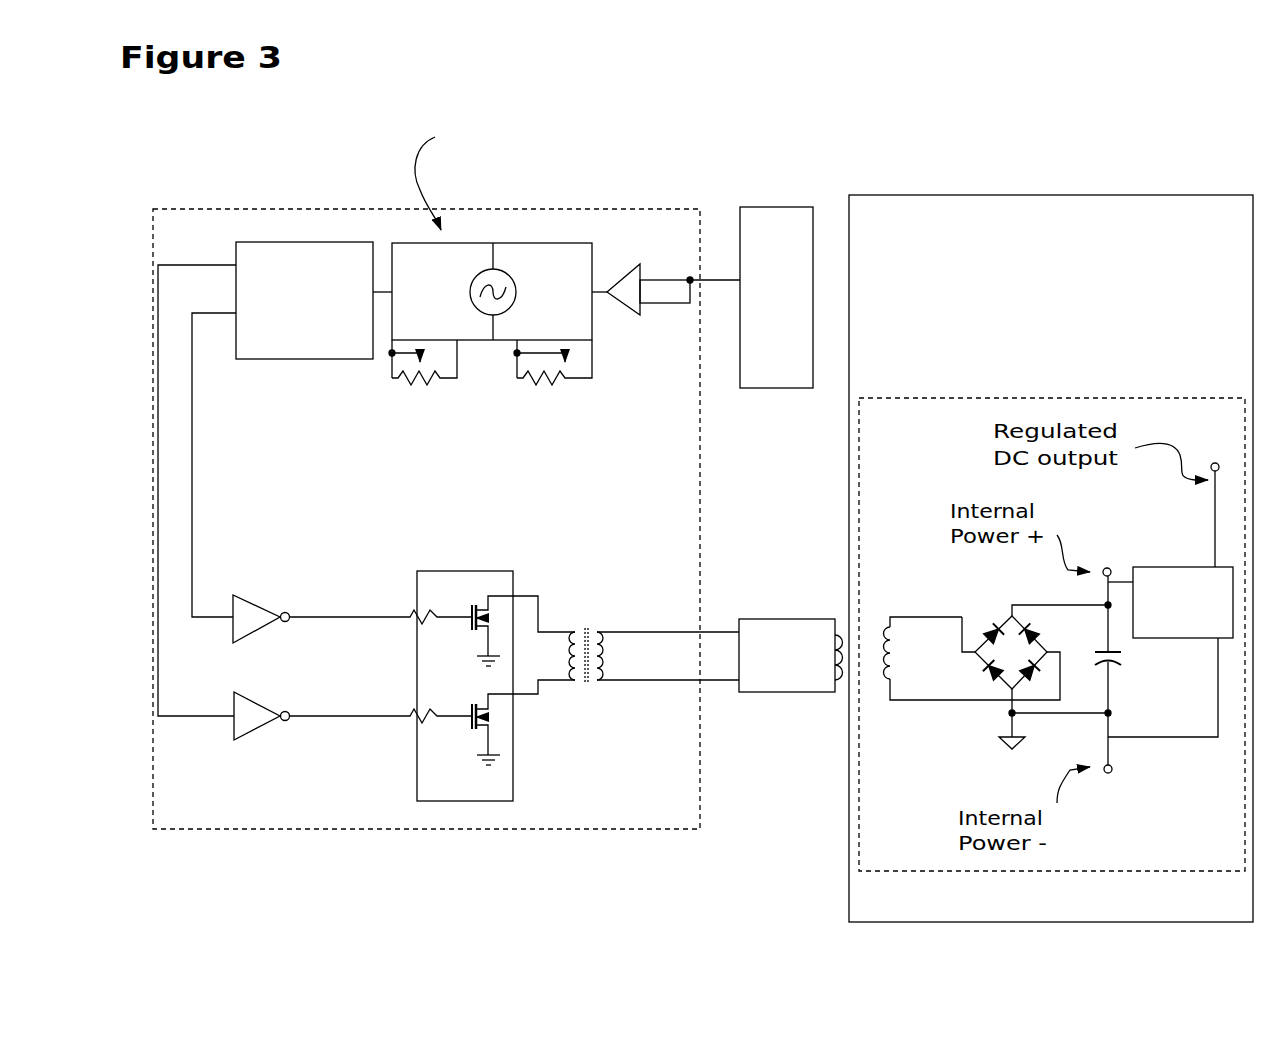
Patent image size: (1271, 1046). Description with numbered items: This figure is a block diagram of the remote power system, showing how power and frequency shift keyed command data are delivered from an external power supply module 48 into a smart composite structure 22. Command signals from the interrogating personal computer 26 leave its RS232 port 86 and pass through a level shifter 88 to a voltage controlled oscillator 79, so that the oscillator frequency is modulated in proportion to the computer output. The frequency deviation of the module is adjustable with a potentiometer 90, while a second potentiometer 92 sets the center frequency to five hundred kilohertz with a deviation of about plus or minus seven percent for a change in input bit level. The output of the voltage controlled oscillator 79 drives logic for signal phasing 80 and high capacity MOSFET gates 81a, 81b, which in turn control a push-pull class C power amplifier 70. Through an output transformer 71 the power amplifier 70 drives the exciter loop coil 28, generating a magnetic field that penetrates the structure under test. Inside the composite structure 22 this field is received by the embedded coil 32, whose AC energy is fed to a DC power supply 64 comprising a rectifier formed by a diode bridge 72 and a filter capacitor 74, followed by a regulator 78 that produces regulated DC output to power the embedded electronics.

The composite structure 22 is at (849, 860).
The personal computer 26 is at (740, 245).
The exciter loop coil 28 is at (833, 692).
The embedded coil 32 is at (885, 660).
The power source with command pulse for FSK modulation 48 is at (442, 829).
The DC power supply 64 is at (1098, 398).
The power amplifier 70 is at (450, 571).
The output transformer 71 is at (592, 688).
The diode bridge 72 is at (978, 611).
The filter capacitor 74 is at (1135, 657).
The regulator 78 is at (1170, 600).
The voltage controlled oscillator 79 is at (518, 278).
The logic for signal phasing 80 is at (275, 479).
The MOSFET gate 81a is at (224, 640).
The MOSFET gate 81b is at (263, 741).
The RS232 port 86 is at (710, 282).
The level shifter 88 is at (650, 326).
The potentiometer 90 is at (445, 378).
The potentiometer 92 is at (570, 378).